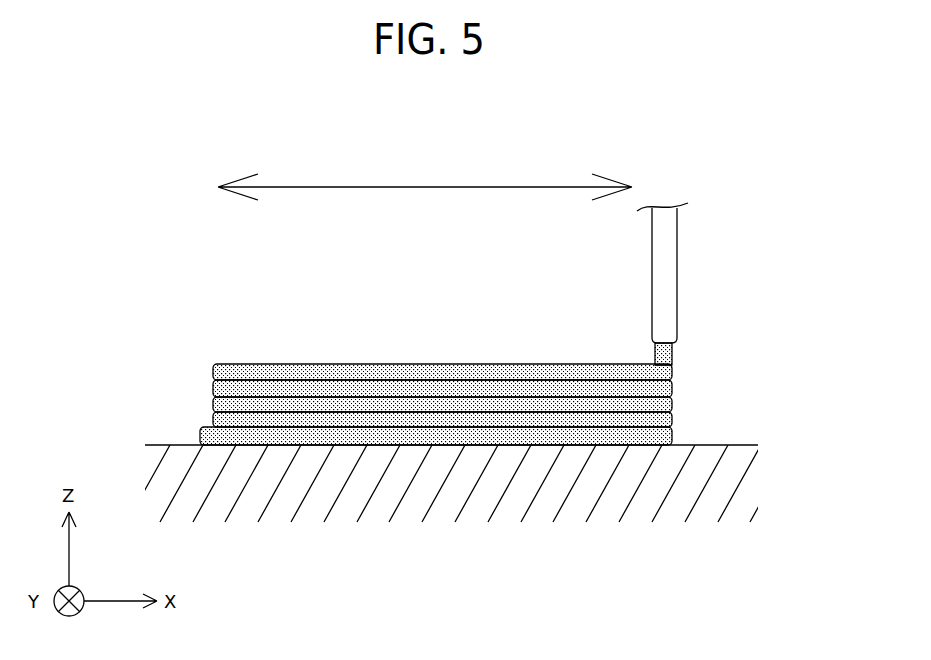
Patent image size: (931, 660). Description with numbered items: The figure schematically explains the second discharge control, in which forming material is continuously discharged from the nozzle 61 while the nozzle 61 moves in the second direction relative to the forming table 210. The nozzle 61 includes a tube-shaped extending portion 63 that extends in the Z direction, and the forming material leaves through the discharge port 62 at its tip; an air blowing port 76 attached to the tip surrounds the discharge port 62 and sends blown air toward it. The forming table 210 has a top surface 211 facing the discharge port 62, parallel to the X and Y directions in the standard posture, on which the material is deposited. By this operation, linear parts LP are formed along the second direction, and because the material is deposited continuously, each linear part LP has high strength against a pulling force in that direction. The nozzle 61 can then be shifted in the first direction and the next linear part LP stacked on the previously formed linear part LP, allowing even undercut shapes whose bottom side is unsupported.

The nozzle 61 is at (671, 280).
The discharge port 62 is at (655, 358).
The extending portion 63 is at (668, 258).
The air blowing port 76 is at (673, 346).
The forming table 210 is at (735, 487).
The top surface 211 is at (723, 443).
The linear part LP is at (403, 388).